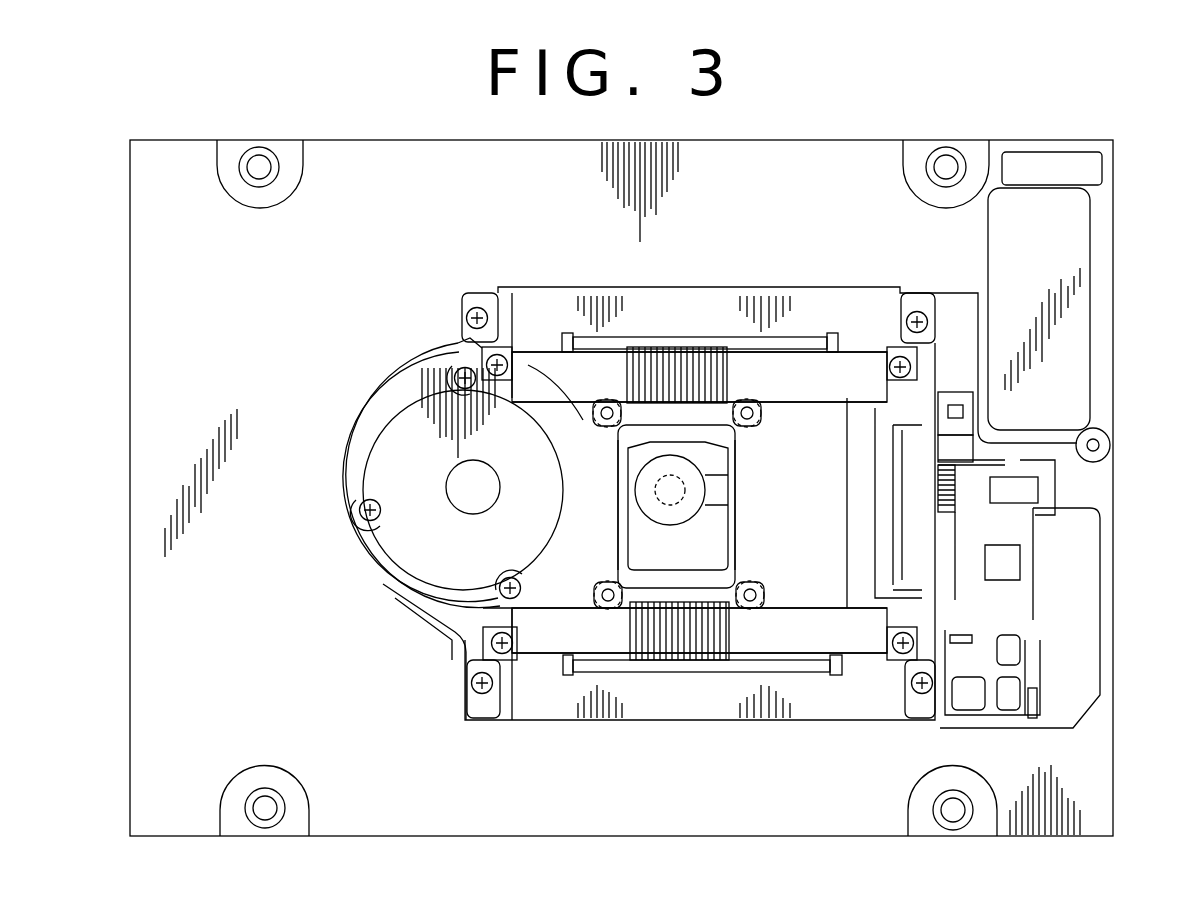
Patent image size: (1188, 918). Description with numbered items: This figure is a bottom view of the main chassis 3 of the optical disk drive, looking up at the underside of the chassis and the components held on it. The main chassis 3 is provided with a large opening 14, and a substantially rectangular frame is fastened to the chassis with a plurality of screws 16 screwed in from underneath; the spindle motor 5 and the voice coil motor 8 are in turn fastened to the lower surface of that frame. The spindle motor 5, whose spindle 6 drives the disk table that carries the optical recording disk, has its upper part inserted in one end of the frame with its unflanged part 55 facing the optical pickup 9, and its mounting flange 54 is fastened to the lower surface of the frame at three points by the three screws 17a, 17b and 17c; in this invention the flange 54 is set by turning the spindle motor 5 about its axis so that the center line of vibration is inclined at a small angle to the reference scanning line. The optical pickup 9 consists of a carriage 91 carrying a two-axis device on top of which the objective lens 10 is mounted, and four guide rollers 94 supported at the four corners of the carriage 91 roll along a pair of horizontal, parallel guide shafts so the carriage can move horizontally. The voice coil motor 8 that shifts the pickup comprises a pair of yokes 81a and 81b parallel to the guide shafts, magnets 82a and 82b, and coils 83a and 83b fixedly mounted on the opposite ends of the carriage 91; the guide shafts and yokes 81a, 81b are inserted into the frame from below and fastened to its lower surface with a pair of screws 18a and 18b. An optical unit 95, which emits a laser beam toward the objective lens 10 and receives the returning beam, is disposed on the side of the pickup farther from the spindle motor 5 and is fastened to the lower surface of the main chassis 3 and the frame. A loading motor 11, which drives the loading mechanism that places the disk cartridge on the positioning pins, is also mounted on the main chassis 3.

The main chassis 3 is at (150, 548).
The spindle motor 5 is at (362, 483).
The spindle 6 is at (445, 485).
The voice coil motor 8 is at (725, 310).
The optical pickup 9 is at (742, 486).
The objective lens 10 is at (672, 503).
The loading motor 11 is at (1055, 218).
The large opening 14 is at (632, 718).
The screws 16 is at (917, 310).
The screw 17a is at (362, 518).
The screw 17b is at (453, 342).
The screw 17c is at (425, 597).
The screw 18a is at (497, 355).
The screw 18b is at (488, 645).
The mounting flange 54 is at (345, 460).
The unflanged part 55 is at (528, 420).
The yoke 81a is at (800, 365).
The yoke 81b is at (796, 640).
The magnet 82a is at (683, 343).
The magnet 82b is at (695, 672).
The coil 83a is at (640, 370).
The coil 83b is at (710, 655).
The carriage 91 is at (627, 530).
The guide rollers 94 is at (765, 420).
The optical unit 95 is at (1075, 570).